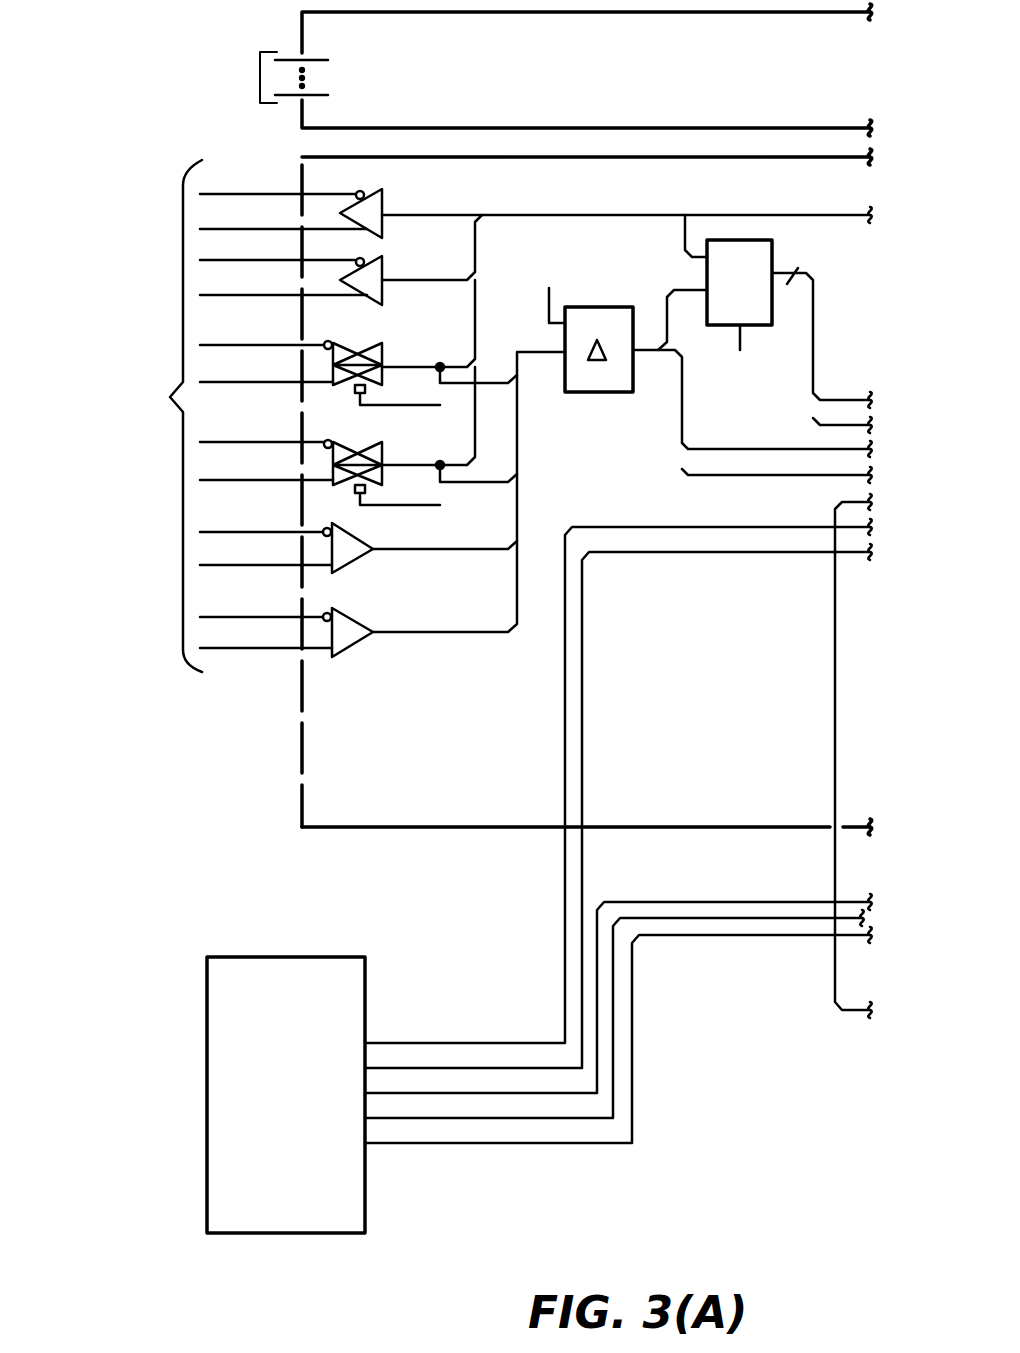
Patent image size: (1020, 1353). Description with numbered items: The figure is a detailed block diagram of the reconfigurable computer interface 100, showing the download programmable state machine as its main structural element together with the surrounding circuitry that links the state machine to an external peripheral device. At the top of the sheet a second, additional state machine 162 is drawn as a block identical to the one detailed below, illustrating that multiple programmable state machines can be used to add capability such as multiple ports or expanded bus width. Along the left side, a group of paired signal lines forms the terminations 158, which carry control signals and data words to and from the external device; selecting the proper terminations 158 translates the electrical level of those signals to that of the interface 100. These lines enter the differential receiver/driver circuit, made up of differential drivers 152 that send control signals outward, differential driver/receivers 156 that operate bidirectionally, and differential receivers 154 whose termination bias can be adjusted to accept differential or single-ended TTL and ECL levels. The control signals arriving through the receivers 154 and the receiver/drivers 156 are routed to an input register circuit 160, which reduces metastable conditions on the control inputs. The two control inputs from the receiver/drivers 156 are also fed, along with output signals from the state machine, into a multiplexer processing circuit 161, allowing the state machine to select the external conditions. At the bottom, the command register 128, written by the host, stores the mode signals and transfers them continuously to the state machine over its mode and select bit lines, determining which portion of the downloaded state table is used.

The reconfigurable computer interface 100 is at (168, 113).
The additional state machine 162 is at (300, 24).
The terminations 158 is at (246, 416).
The differential drivers 152 is at (384, 189).
The differential driver/receivers 156 is at (384, 343).
The differential receivers 154 is at (357, 561).
The input register circuit 160 is at (605, 307).
The multiplexer processing circuit 161 is at (775, 248).
The command register 128 is at (272, 955).